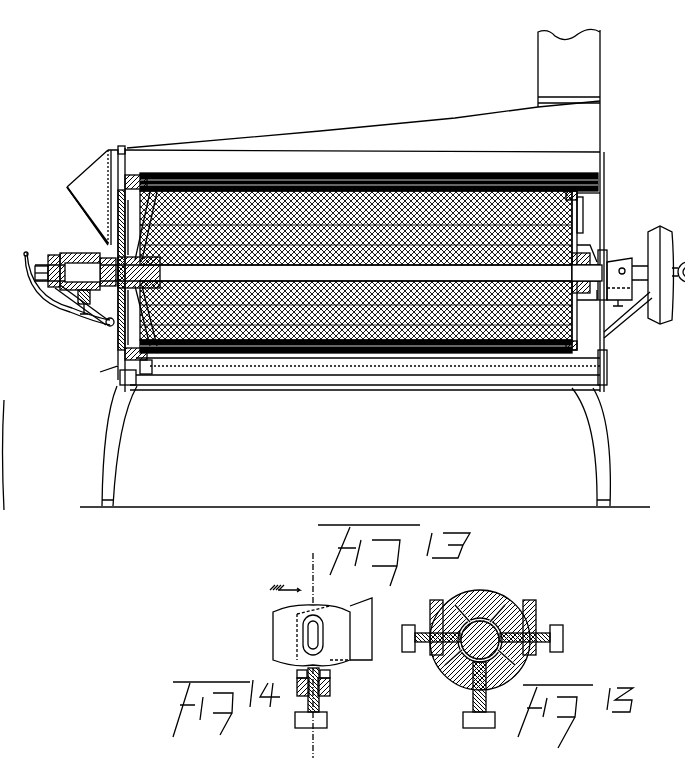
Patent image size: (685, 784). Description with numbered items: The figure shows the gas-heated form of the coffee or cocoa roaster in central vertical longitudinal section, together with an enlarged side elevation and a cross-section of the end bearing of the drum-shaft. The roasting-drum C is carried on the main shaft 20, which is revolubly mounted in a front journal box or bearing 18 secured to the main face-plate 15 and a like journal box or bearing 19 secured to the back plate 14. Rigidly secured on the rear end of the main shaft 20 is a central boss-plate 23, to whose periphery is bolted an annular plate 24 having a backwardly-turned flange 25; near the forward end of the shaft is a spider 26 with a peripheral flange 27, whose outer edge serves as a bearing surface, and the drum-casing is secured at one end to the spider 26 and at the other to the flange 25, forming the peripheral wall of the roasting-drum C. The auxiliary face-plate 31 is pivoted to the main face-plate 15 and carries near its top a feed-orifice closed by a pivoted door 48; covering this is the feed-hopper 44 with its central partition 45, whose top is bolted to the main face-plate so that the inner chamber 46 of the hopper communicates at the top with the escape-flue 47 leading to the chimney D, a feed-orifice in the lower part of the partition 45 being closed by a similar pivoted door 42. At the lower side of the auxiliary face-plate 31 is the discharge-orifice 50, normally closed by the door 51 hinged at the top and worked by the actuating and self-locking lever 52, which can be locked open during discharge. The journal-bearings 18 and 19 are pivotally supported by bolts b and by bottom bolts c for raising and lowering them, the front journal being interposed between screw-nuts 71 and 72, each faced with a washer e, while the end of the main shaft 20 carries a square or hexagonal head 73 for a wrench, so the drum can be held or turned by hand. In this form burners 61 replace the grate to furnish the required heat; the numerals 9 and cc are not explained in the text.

In FIG. 13, the escape-flue 47 is at (362, 211).
In FIG. 13, the chimney D is at (569, 68).
In FIG. 13, the back plate 14 is at (606, 356).
In FIG. 13, the roasting-drum C is at (484, 190).
In FIG. 13, the spider 26 is at (317, 273).
In FIG. 13, the inner chamber 46 is at (133, 267).
In FIG. 13, the central partition 45 is at (114, 150).
In FIG. 13, the main face-plate 15 is at (123, 142).
In FIG. 14, the main face-plate 15 is at (314, 655).
In FIG. 13, the feed-hopper 44 is at (65, 190).
In FIG. 13, the pivoted door 42 is at (110, 198).
In FIG. 13, the pivoted door 48 is at (106, 230).
In FIG. 13, the frame member 9 is at (118, 238).
In FIG. 13, the auxiliary face-plate 31 is at (124, 254).
In FIG. 13, the journal box or bearing 18 is at (80, 282).
In FIG. 14, the journal box or bearing 18 is at (318, 610).
In FIG. 15, the journal box or bearing 18 is at (480, 610).
In FIG. 13, the washer e is at (84, 275).
In FIG. 13, the screw-nut 71 is at (52, 255).
In FIG. 13, the square or hexagonal head 73 is at (40, 266).
In FIG. 13, the actuating and self-locking lever 52 is at (44, 290).
In FIG. 13, the bottom bolt c is at (60, 318).
In FIG. 14, the bottom bolt c is at (312, 698).
In FIG. 15, the bottom bolt c is at (479, 695).
In FIG. 13, the screw-nut 72 is at (110, 305).
In FIG. 13, the door 51 is at (118, 352).
In FIG. 13, the discharge-orifice 50 is at (104, 372).
In FIG. 13, the peripheral flange 27 is at (152, 360).
In FIG. 13, the burners 61 is at (210, 366).
In FIG. 13, the backwardly-turned flange 25 is at (582, 197).
In FIG. 13, the annular plate 24 is at (583, 218).
In FIG. 13, the central boss-plate 23 is at (580, 250).
In FIG. 13, the journal box or bearing 19 is at (627, 258).
In FIG. 13, the bolt b is at (613, 271).
In FIG. 15, the bolt b is at (482, 627).
In FIG. 13, the main shaft 20 is at (680, 245).
In FIG. 15, the main shaft 20 is at (488, 625).
In FIG. 13, the rod cc is at (624, 312).